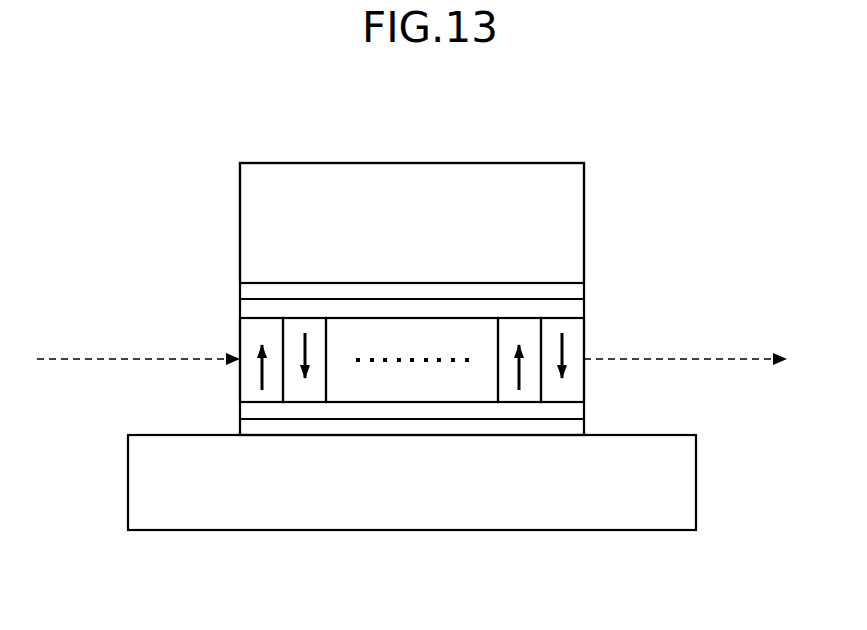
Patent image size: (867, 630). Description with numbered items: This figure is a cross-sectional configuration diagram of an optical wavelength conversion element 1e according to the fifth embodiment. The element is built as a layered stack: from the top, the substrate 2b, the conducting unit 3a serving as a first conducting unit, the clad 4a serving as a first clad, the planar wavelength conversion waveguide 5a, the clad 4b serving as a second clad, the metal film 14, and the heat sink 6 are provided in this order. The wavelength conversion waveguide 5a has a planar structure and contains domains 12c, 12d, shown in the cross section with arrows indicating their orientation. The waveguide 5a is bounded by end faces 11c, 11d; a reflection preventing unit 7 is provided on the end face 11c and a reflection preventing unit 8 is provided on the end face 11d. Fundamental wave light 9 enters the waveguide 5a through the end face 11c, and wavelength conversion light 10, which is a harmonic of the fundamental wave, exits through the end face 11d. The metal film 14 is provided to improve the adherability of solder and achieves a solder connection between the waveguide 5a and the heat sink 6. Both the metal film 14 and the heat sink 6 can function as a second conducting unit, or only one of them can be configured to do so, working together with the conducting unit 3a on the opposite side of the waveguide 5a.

The optical wavelength conversion element 1e is at (484, 170).
The substrate 2b is at (573, 180).
The conducting unit 3a is at (584, 291).
The clad 4a is at (240, 300).
The clad 4b is at (273, 415).
The planar wavelength conversion waveguide 5a is at (412, 395).
The heat sink 6 is at (696, 485).
The reflection preventing unit 7 is at (240, 333).
The reflection preventing unit 8 is at (584, 331).
The fundamental wave light 9 is at (68, 362).
The wavelength conversion light 10 is at (735, 363).
The end face 11c is at (240, 383).
The end face 11d is at (584, 385).
The domain 12c is at (519, 395).
The domain 12d is at (562, 395).
The metal film 14 is at (337, 425).